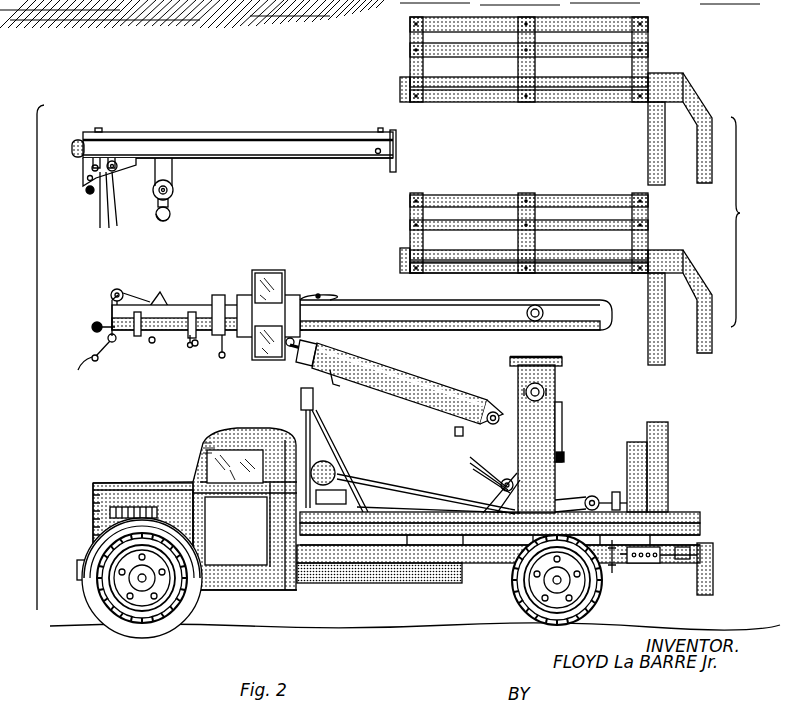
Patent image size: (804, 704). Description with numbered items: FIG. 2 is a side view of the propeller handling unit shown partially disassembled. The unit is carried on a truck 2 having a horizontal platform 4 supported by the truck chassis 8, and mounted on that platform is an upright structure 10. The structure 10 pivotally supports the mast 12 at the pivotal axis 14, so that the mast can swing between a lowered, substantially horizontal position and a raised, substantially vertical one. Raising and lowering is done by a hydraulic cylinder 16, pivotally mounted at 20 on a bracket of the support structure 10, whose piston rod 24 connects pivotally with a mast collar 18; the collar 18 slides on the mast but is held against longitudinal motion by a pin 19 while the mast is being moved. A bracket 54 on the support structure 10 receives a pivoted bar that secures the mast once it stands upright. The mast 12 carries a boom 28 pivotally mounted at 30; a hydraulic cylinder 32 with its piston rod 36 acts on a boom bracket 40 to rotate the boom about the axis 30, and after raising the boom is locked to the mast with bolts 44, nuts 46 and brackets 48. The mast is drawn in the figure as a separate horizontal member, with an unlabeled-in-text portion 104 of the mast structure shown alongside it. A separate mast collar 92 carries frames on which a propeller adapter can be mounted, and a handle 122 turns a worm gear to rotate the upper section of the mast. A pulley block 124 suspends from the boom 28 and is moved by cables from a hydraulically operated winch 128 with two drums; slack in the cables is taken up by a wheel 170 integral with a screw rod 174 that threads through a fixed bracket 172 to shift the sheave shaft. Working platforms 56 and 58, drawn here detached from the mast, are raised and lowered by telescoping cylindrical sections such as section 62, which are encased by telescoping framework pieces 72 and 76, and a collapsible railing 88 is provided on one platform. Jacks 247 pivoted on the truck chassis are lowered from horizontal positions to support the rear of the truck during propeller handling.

The truck 2 is at (151, 477).
The horizontal platform 4 is at (697, 513).
The truck chassis 8 is at (470, 592).
The upright structure 10 is at (553, 425).
The mast 12 is at (510, 330).
The pivotal axis 14 is at (552, 388).
The hydraulic cylinder 16 is at (416, 378).
The mast collar 18 is at (275, 152).
The pin 19 is at (290, 300).
The pivotal axis 20 is at (492, 486).
The piston rod 24 is at (290, 350).
The boom 28 is at (212, 130).
The pivotal axis 30 is at (118, 168).
The hydraulic cylinder 32 is at (170, 330).
The piston rod 36 is at (105, 322).
The boom bracket 40 is at (84, 177).
The bolt 44 is at (100, 362).
The nut 46 is at (78, 372).
The bracket 48 is at (73, 146).
The bracket 54 is at (574, 464).
The working platform 56 is at (550, 274).
The working platform 58 is at (650, 32).
The telescoping cylindrical section 62 is at (648, 136).
The telescoping framework piece 72 is at (668, 435).
The telescoping framework piece 76 is at (648, 335).
The collapsible railing 88 is at (478, 196).
The mast collar 92 is at (245, 290).
The boom section 104 is at (370, 318).
The handle 122 is at (221, 357).
The pulley block 124 is at (172, 192).
The hydraulically operated winch 128 is at (346, 470).
The wheel 170 is at (630, 496).
The fixed bracket 172 is at (590, 493).
The screw rod 174 is at (618, 498).
The jack 247 is at (655, 566).